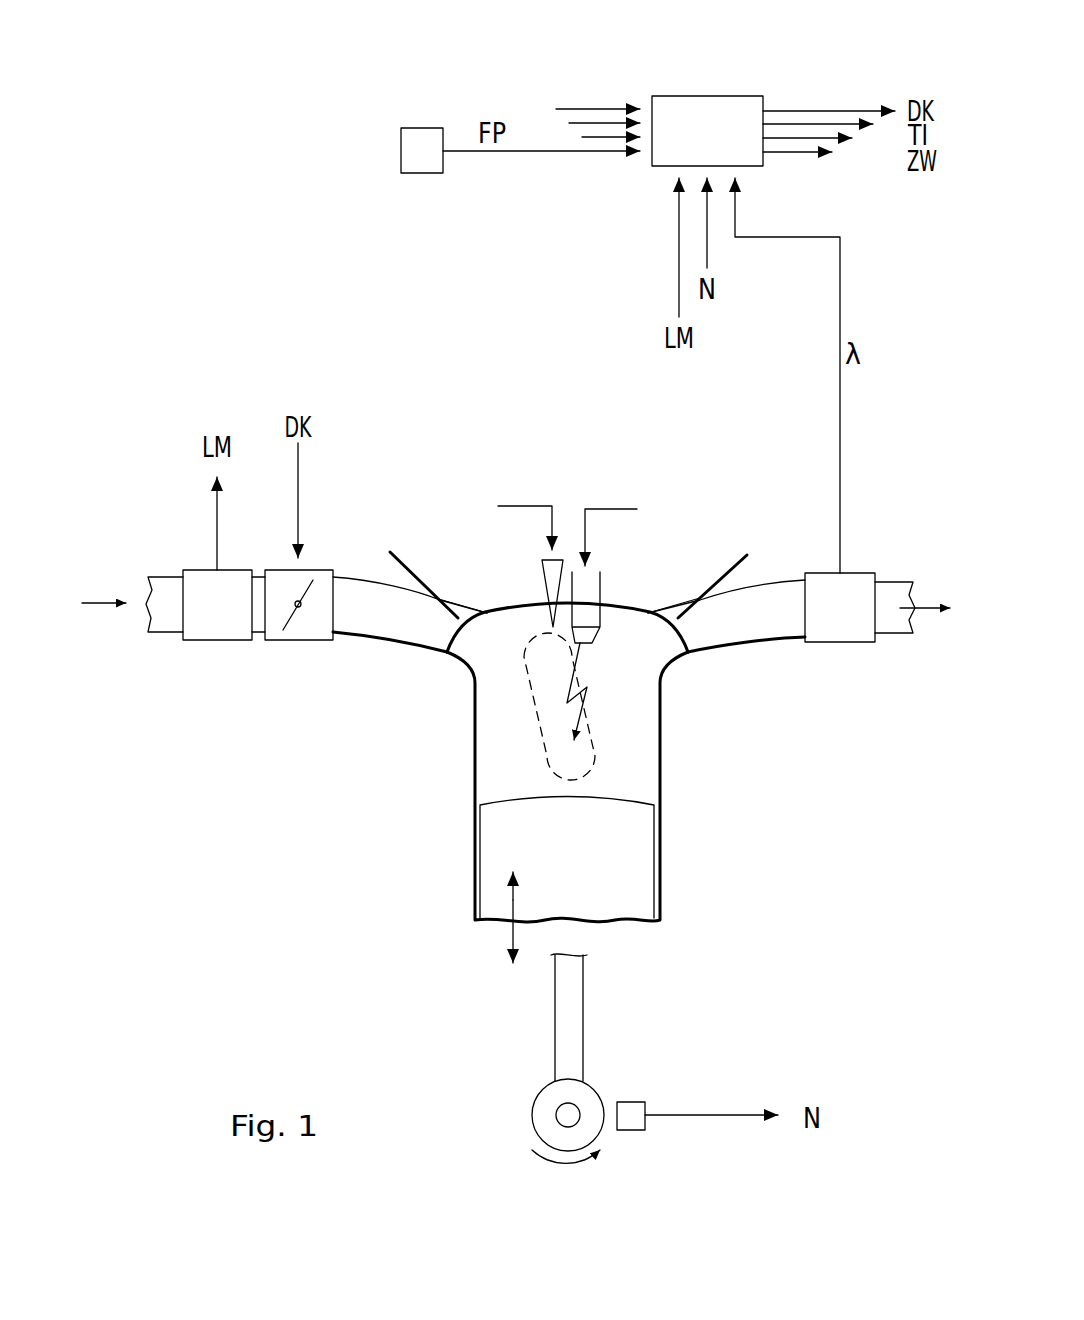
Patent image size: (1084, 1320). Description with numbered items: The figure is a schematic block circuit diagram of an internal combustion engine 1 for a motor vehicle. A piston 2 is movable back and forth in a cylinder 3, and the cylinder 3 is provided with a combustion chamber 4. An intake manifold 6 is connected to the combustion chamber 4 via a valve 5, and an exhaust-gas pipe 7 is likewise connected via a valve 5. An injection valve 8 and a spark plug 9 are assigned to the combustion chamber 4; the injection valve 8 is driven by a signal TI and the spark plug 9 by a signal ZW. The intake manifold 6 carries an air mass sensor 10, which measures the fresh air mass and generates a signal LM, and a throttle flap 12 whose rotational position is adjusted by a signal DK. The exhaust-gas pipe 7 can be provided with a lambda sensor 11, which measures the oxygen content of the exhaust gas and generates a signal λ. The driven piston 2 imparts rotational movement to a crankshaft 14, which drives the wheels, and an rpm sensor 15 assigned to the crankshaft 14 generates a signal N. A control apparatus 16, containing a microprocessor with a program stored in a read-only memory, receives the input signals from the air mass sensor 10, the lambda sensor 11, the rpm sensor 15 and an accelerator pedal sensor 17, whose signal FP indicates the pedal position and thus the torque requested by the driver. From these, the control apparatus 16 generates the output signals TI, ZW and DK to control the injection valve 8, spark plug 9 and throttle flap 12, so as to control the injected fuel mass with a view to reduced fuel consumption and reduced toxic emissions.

The internal combustion engine 1 is at (542, 727).
The piston 2 is at (642, 865).
The cylinder 3 is at (662, 775).
The combustion chamber 4 is at (648, 730).
The valve 5 is at (463, 615).
The intake manifold 6 is at (383, 630).
The exhaust-gas pipe 7 is at (743, 635).
The injection valve 8 is at (550, 580).
The spark plug 9 is at (598, 588).
The air mass sensor 10 is at (226, 630).
The lambda sensor 11 is at (837, 635).
The throttle flap 12 is at (312, 630).
The crankshaft 14 is at (556, 1113).
The rpm sensor 15 is at (633, 1110).
The control apparatus 16 is at (712, 96).
The accelerator pedal sensor 17 is at (428, 128).